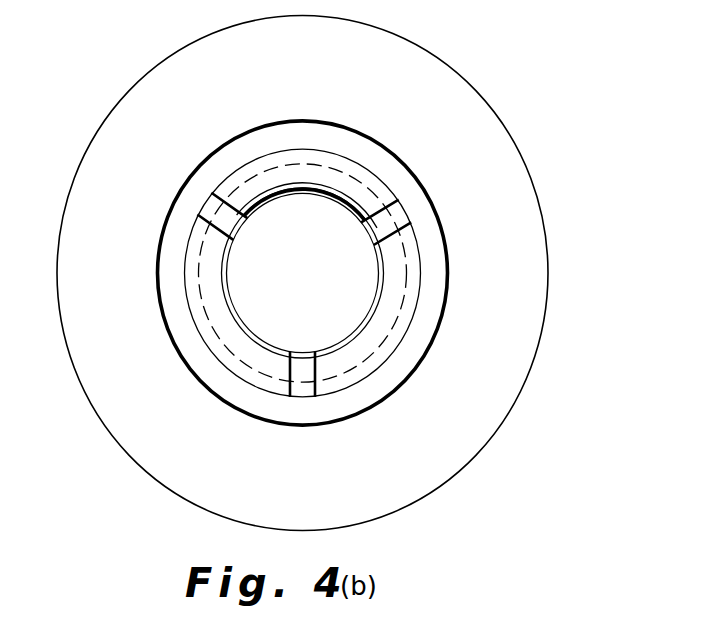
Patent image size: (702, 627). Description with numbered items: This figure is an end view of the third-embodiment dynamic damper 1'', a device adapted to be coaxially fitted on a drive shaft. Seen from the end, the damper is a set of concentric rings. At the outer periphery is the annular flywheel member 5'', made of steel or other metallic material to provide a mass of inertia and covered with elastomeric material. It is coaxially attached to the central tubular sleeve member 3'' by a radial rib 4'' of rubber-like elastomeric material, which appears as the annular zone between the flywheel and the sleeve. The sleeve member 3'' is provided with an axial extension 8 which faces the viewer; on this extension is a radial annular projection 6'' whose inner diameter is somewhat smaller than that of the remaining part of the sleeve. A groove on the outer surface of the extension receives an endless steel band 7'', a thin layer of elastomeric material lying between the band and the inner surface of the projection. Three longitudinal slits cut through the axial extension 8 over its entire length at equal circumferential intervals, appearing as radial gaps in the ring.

The dynamic damper 1'' is at (325, 273).
The sleeve member 3'' is at (303, 273).
The radial rib 4'' is at (326, 273).
The flywheel member 5'' is at (325, 273).
The radial annular projection 6'' is at (346, 292).
The endless steel band 7'' is at (361, 198).
The axial extension 8 is at (350, 380).